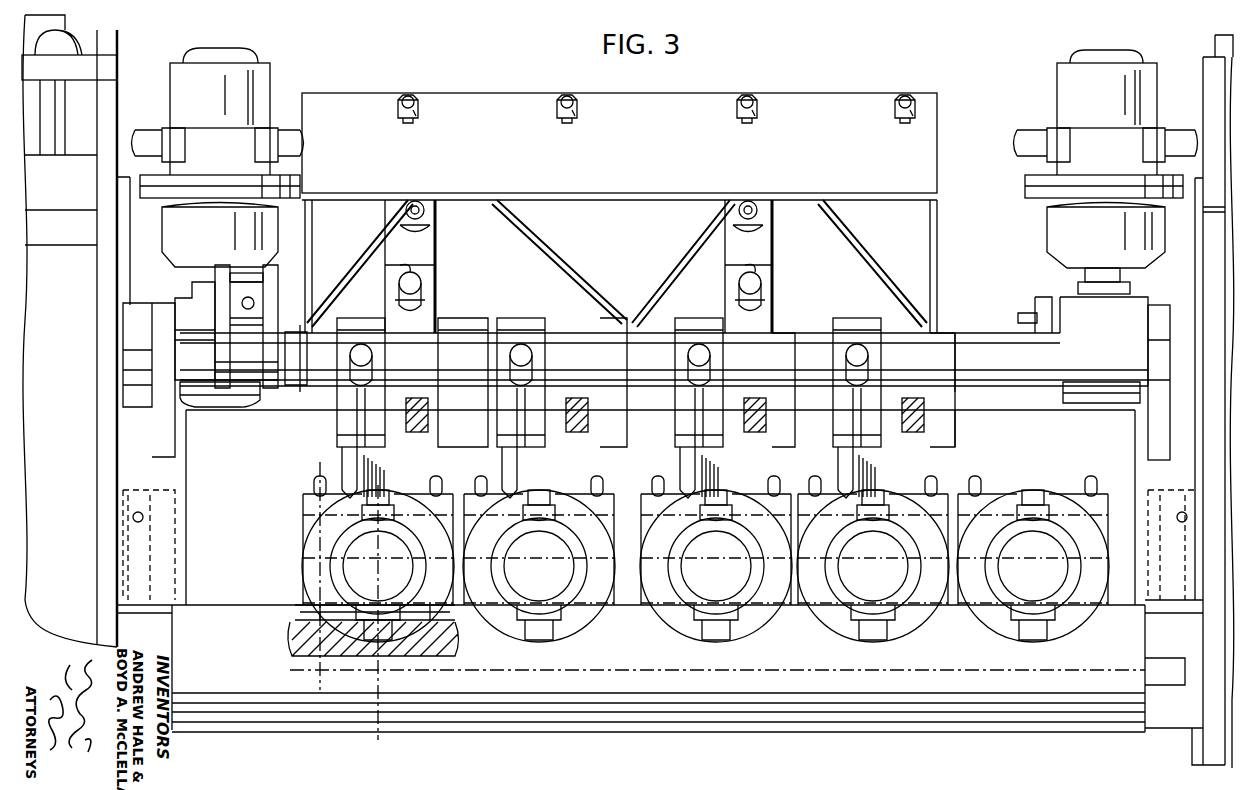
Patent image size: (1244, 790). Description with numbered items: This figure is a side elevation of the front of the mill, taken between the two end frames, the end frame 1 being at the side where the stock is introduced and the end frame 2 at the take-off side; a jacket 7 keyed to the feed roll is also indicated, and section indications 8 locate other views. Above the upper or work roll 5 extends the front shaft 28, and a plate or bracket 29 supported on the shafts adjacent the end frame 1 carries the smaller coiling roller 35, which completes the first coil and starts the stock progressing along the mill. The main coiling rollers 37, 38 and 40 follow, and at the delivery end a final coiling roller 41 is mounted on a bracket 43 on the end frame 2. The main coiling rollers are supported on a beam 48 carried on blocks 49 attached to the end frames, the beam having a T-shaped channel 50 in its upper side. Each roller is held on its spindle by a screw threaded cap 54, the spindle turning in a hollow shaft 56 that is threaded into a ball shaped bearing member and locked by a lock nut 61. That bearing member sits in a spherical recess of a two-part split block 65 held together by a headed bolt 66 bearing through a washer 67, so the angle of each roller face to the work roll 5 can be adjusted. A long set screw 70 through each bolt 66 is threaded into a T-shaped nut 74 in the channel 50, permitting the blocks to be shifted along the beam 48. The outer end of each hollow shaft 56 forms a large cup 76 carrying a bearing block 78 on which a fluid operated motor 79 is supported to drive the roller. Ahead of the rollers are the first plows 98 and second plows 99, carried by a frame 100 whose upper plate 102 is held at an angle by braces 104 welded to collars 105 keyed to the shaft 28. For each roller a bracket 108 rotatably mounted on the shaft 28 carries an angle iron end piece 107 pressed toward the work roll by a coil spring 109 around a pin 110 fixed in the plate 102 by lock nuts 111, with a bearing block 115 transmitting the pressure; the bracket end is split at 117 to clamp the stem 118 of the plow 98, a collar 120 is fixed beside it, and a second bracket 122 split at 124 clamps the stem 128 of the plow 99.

The end frame 1 is at (1205, 738).
The end frame 2 is at (107, 240).
The work roll 5 is at (976, 428).
The jacket 7 is at (382, 482).
The section line 8- 8 is at (303, 466).
The shaft 28 is at (992, 342).
The plate or bracket 29 is at (1156, 312).
The coiling roller 35 is at (1065, 394).
The main coiling roller 37 is at (790, 500).
The main coiling roller 38 is at (758, 500).
The main coiling roller 40 is at (378, 500).
The final coiling roller 41 is at (210, 400).
The bracket 43 is at (166, 310).
The beam 48 is at (690, 714).
The blocks 49 is at (158, 627).
The T-shaped channel 50 is at (290, 620).
The screw threaded cap 54 is at (330, 590).
The hollow shaft 56 is at (290, 298).
The lock nut 61 is at (205, 290).
The split block 65 is at (292, 566).
The headed bolt 66 is at (305, 320).
The washer 67 is at (330, 522).
The set screw 70 is at (312, 478).
The T-shaped nut 74 is at (456, 636).
The cup 76 is at (272, 238).
The bearing block 78 is at (298, 190).
The motor 79 is at (252, 80).
The first plow 98 is at (420, 395).
The second plow 99 is at (347, 464).
The frame 100 is at (890, 88).
The upper plate 102 is at (622, 95).
The braces 104 is at (305, 272).
The collars 105 is at (305, 398).
The angle iron end piece 107 is at (425, 248).
The bracket 108 is at (425, 296).
The coil spring 109 is at (425, 212).
The pin 110 is at (403, 94).
The lock nuts 111 is at (420, 108).
The bearing block 115 is at (430, 230).
The split end 117 is at (410, 266).
The stem 118 is at (415, 280).
The collar 120 is at (445, 332).
The second bracket 122 is at (366, 332).
The split 124 is at (322, 425).
The stem 128 is at (368, 346).